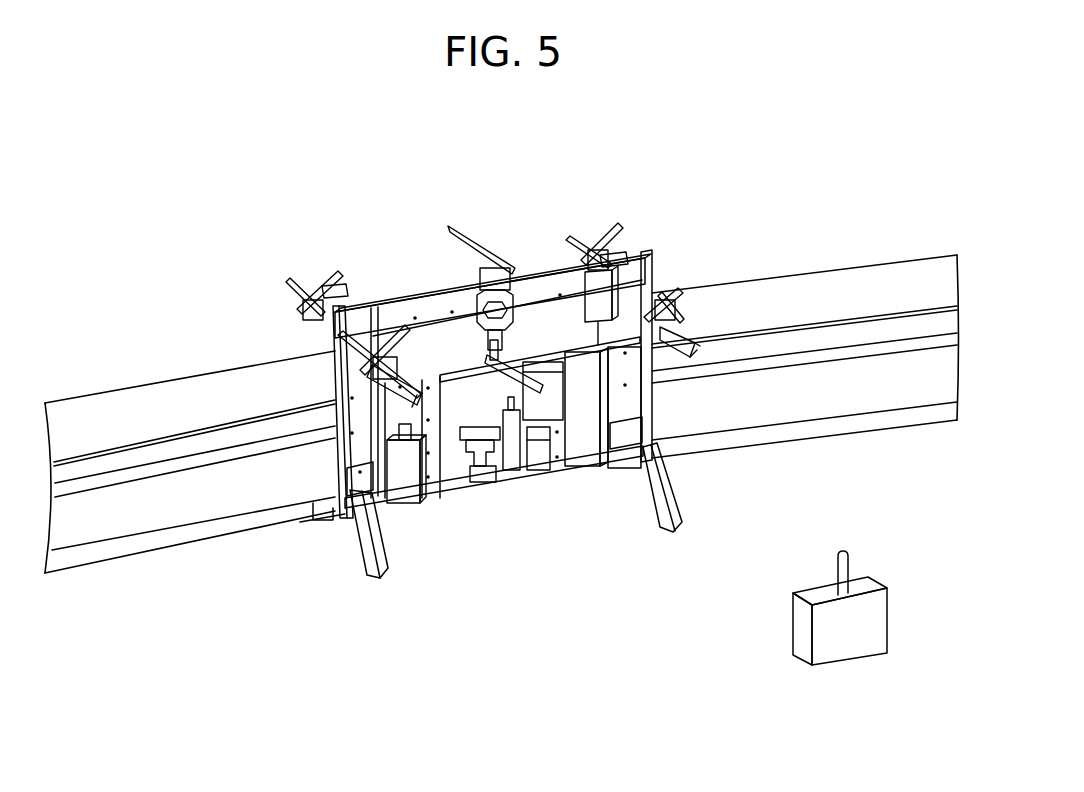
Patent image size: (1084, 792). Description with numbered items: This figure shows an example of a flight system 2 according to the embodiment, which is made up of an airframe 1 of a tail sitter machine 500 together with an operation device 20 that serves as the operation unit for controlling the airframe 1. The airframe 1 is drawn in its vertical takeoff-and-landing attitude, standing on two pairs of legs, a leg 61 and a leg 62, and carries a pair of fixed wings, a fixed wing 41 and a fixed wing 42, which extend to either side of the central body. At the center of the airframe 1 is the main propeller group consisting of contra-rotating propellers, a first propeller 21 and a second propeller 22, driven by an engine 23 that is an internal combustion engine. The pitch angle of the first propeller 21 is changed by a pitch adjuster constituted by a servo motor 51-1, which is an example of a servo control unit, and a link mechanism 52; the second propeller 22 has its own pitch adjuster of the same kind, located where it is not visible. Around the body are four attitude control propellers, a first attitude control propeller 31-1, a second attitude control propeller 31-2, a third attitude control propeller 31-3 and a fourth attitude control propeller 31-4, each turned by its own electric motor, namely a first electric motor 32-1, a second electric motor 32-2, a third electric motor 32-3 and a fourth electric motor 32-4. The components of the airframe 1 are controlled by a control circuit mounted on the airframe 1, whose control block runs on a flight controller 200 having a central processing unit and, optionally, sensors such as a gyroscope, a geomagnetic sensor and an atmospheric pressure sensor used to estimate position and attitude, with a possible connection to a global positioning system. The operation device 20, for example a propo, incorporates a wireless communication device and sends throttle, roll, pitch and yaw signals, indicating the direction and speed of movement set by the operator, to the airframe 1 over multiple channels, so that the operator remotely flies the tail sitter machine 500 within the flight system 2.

The airframe 1 is at (410, 198).
The flight system 2 is at (120, 160).
The tail sitter machine 500 is at (730, 164).
The operation device 20 is at (852, 668).
The first propeller 21 is at (490, 266).
The second propeller 22 is at (508, 296).
The engine 23 is at (490, 485).
The first attitude control propeller 31-1 is at (318, 290).
The second attitude control propeller 31-2 is at (682, 298).
The third attitude control propeller 31-3 is at (607, 226).
The fourth attitude control propeller 31-4 is at (372, 347).
The first electric motor 32-1 is at (340, 292).
The second electric motor 32-2 is at (700, 325).
The third electric motor 32-3 is at (616, 266).
The fourth electric motor 32-4 is at (392, 383).
The fixed wing 41 is at (190, 503).
The fixed wing 42 is at (858, 398).
The servo motor 51-1 is at (630, 290).
The link mechanism 52 is at (546, 286).
The leg 61 is at (367, 569).
The leg 62 is at (669, 531).
The flight controller 200 is at (550, 406).